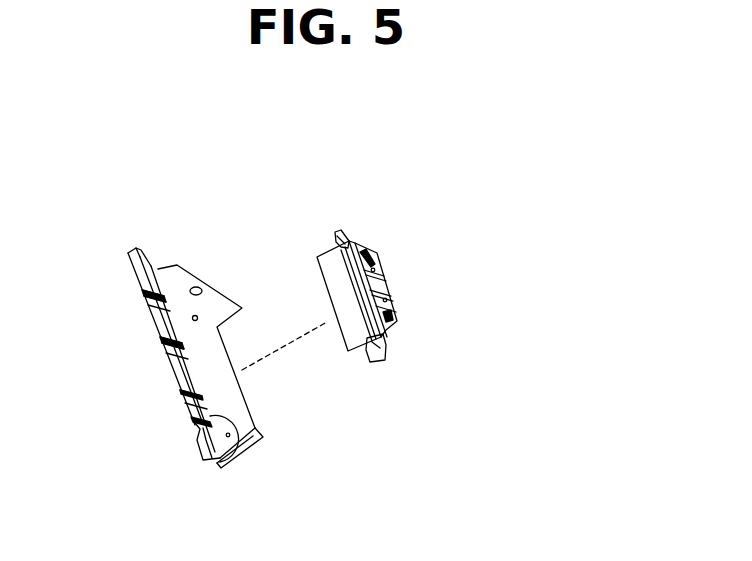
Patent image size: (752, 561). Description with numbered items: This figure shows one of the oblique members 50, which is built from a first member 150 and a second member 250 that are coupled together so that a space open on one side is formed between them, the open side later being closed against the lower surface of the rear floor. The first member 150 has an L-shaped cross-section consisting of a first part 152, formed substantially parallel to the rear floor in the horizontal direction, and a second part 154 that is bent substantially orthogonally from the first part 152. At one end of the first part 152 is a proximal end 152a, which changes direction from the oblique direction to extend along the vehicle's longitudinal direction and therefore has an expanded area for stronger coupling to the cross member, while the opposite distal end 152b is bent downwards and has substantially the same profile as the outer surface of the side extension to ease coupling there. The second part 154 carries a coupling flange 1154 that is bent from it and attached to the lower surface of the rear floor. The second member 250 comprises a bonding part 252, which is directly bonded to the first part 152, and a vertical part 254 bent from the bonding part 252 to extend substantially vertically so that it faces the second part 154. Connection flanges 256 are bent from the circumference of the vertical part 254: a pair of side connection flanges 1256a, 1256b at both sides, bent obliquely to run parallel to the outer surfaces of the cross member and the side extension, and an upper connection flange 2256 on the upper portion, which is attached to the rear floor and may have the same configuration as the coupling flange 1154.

The oblique member 50 is at (225, 128).
The first member 150 is at (156, 250).
The first part 152 is at (228, 402).
The proximal end 152a is at (178, 284).
The distal end 152b is at (245, 456).
The second part 154 is at (222, 470).
The coupling flange 1154 is at (178, 372).
The second member 250 is at (377, 243).
The bonding part 252 is at (353, 340).
The vertical part 254 is at (395, 313).
The connection flanges 256 is at (416, 285).
The side connection flange 1256a is at (333, 232).
The upper connection flange 2256 is at (391, 283).
The side connection flange 1256b is at (380, 364).